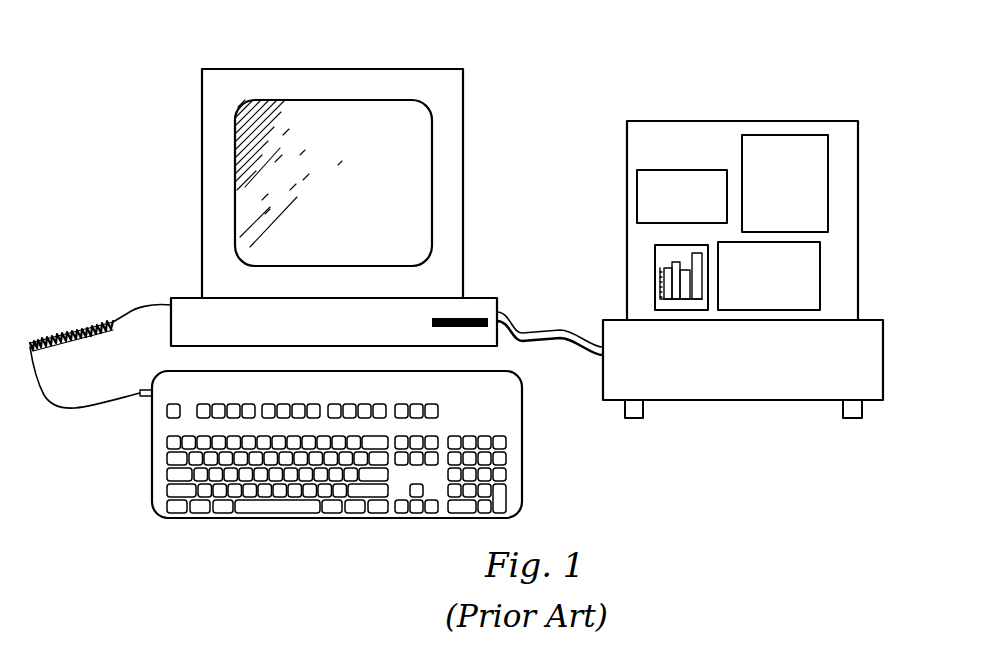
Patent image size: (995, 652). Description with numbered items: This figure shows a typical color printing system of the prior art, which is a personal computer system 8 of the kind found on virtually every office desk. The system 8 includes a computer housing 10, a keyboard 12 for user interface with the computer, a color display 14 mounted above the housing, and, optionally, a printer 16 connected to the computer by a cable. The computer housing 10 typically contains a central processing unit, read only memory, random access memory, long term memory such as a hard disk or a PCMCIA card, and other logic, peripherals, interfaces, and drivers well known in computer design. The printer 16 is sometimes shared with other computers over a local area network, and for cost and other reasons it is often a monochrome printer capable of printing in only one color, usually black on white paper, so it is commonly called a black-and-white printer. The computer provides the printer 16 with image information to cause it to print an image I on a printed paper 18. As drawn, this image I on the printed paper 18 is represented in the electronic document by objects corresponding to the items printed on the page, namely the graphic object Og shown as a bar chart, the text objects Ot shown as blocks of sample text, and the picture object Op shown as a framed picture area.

The computer system 8 is at (493, 120).
The computer housing 10 is at (187, 298).
The keyboard 12 is at (152, 453).
The color display 14 is at (250, 69).
The printer 16 is at (742, 400).
The printed paper 18 is at (659, 140).
The image I is at (847, 177).
The picture object Op is at (783, 135).
The text objects Ot is at (868, 270).
The graphic object Og is at (655, 257).